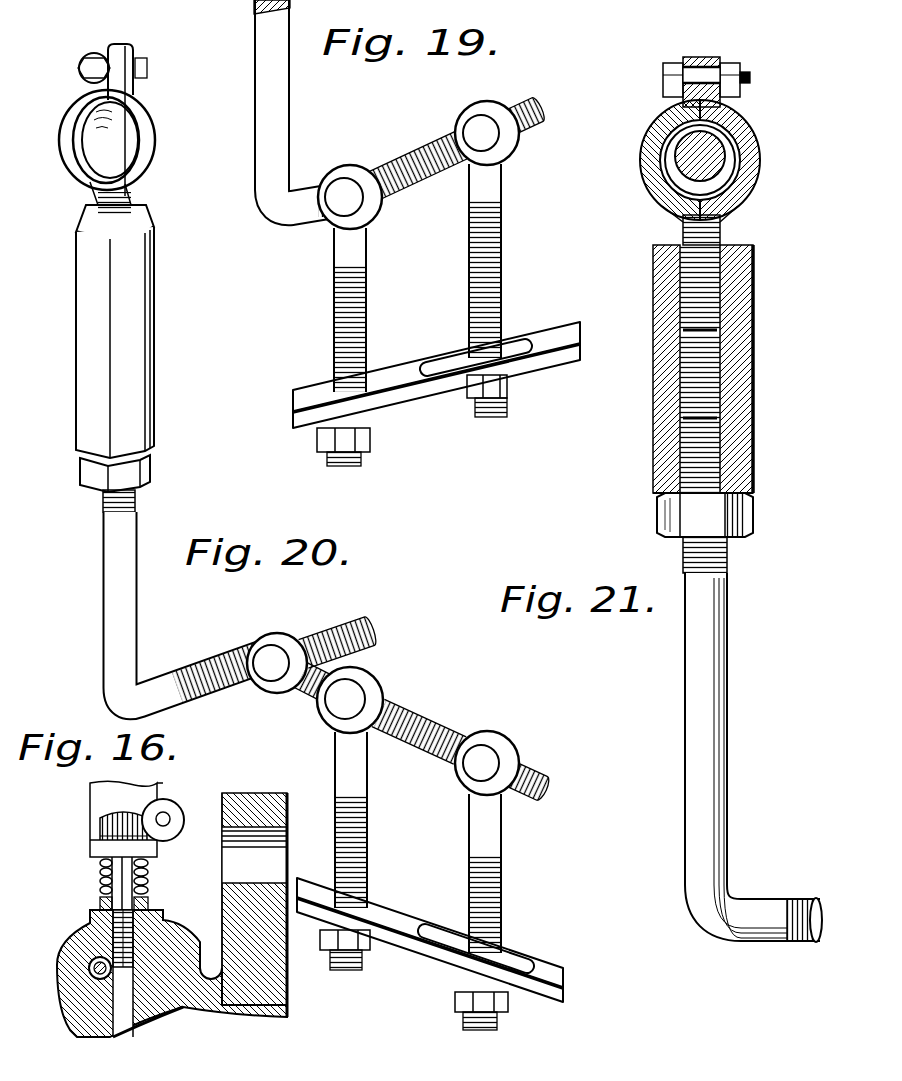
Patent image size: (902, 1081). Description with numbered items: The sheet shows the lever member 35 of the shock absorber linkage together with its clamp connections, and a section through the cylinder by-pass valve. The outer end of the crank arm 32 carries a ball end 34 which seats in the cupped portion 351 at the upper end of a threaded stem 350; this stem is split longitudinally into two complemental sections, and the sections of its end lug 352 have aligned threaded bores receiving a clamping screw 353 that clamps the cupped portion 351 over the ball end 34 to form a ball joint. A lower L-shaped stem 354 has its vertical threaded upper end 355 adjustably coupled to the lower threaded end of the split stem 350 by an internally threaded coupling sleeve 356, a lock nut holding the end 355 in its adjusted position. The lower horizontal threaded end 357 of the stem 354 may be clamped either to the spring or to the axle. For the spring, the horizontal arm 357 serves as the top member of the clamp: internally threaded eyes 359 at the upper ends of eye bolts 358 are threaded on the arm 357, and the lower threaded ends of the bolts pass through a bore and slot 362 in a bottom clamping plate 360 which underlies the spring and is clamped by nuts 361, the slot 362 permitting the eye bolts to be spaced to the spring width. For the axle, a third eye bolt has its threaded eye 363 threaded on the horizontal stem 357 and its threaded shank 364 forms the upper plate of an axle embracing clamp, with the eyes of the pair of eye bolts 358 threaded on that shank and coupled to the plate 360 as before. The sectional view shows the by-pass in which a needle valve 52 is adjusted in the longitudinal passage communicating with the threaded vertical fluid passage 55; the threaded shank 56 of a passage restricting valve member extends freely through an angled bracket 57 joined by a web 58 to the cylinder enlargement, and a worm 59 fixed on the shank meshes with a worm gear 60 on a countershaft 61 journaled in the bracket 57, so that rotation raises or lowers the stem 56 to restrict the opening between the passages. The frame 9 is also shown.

In FIG. 16, the frame member 9 is at (250, 807).
In FIG. 21, the crank arm 32 is at (716, 165).
In FIG. 21, the ball end 34 is at (714, 126).
In FIG. 20, the lever member 35 is at (157, 382).
In FIG. 21, the lever member 35 is at (654, 480).
In FIG. 16, the needle valve 52 is at (88, 950).
In FIG. 16, the vertical fluid passage 55 is at (132, 928).
In FIG. 16, the threaded shank 56 is at (118, 870).
In FIG. 16, the angled bracket 57 is at (150, 852).
In FIG. 16, the web 58 is at (107, 794).
In FIG. 16, the worm 59 is at (103, 822).
In FIG. 16, the worm gear 60 is at (172, 830).
In FIG. 16, the countershaft 61 is at (165, 815).
In FIG. 20, the threaded stem 350 is at (132, 205).
In FIG. 21, the threaded stem 350 is at (726, 233).
In FIG. 20, the cupped portion 351 is at (128, 138).
In FIG. 21, the cupped portion 351 is at (650, 128).
In FIG. 20, the end lug 352 is at (132, 88).
In FIG. 21, the end lug 352 is at (700, 53).
In FIG. 20, the clamping screw 353 is at (88, 67).
In FIG. 21, the clamping screw 353 is at (735, 66).
In FIG. 19, the L-shaped stem 354 is at (300, 190).
In FIG. 20, the L-shaped stem 354 is at (162, 674).
In FIG. 21, the L-shaped stem 354 is at (748, 897).
In FIG. 20, the threaded upper end 355 is at (136, 497).
In FIG. 21, the threaded upper end 355 is at (722, 472).
In FIG. 20, the coupling sleeve 356 is at (88, 352).
In FIG. 21, the coupling sleeve 356 is at (742, 376).
In FIG. 19, the horizontal threaded end 357 is at (414, 153).
In FIG. 20, the horizontal threaded end 357 is at (322, 633).
In FIG. 21, the horizontal threaded end 357 is at (800, 942).
In FIG. 19, the eye bolt 358 is at (470, 258).
In FIG. 20, the eye bolt 358 is at (370, 742).
In FIG. 19, the internally threaded eye 359 is at (447, 198).
In FIG. 19, the bottom clamping plate 360 is at (395, 358).
In FIG. 20, the bottom clamping plate 360 is at (402, 905).
In FIG. 19, the nut 361 is at (320, 445).
In FIG. 20, the nut 361 is at (342, 952).
In FIG. 19, the slot 362 is at (527, 325).
In FIG. 20, the slot 362 is at (530, 978).
In FIG. 20, the threaded eye 363 is at (270, 638).
In FIG. 20, the threaded shank 364 is at (440, 708).